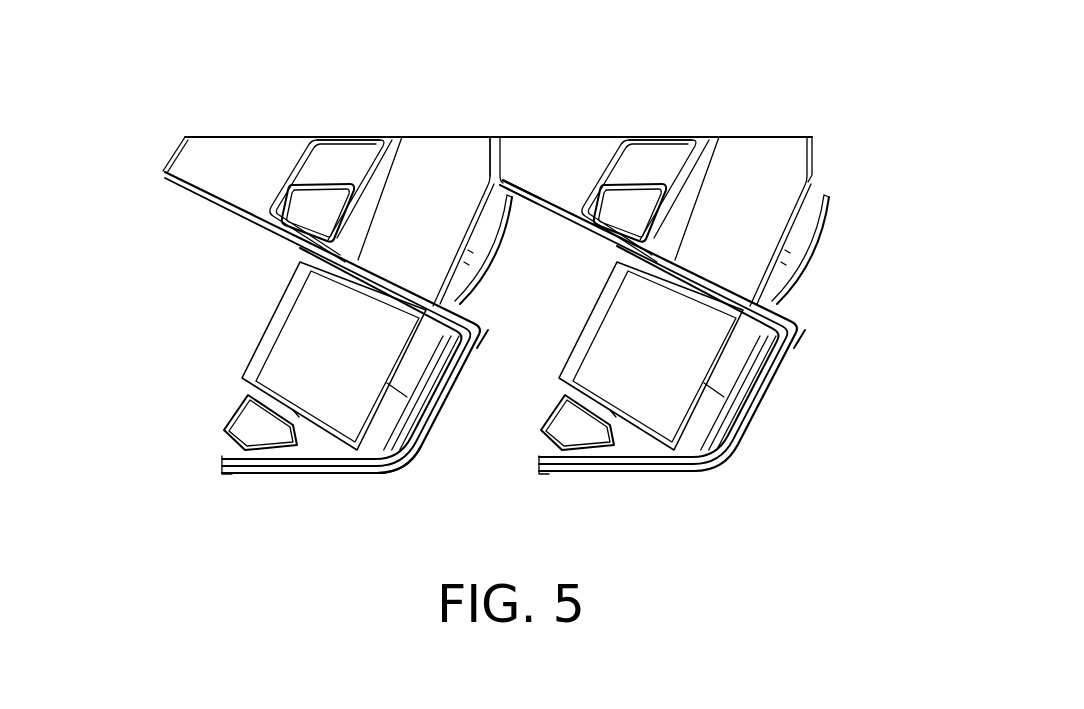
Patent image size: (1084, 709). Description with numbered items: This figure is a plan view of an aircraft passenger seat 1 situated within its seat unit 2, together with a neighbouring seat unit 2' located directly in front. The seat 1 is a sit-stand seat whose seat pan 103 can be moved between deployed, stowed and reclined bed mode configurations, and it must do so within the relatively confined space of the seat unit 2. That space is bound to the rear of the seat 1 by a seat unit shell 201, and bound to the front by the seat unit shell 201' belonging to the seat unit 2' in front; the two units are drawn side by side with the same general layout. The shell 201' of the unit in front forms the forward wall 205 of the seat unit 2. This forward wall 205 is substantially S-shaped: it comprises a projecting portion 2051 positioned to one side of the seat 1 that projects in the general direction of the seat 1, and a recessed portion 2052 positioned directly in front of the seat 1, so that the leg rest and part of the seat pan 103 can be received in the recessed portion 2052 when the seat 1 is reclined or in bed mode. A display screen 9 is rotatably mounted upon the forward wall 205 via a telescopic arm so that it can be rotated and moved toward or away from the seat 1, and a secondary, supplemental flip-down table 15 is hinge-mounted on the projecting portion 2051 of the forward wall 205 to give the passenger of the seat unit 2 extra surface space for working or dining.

The aircraft passenger seat 1 is at (752, 189).
The seat unit 2 is at (684, 239).
The seat unit in front 2' is at (358, 242).
The display screen 9 is at (517, 187).
The secondary table 15 is at (462, 385).
The seat pan 103 is at (652, 372).
The seat unit shell 201 is at (700, 325).
The seat unit shell of the seat unit in front 201' is at (281, 322).
The forward wall 205 is at (337, 475).
The projecting portion 2051 is at (397, 470).
The recessed portion 2052 is at (462, 230).